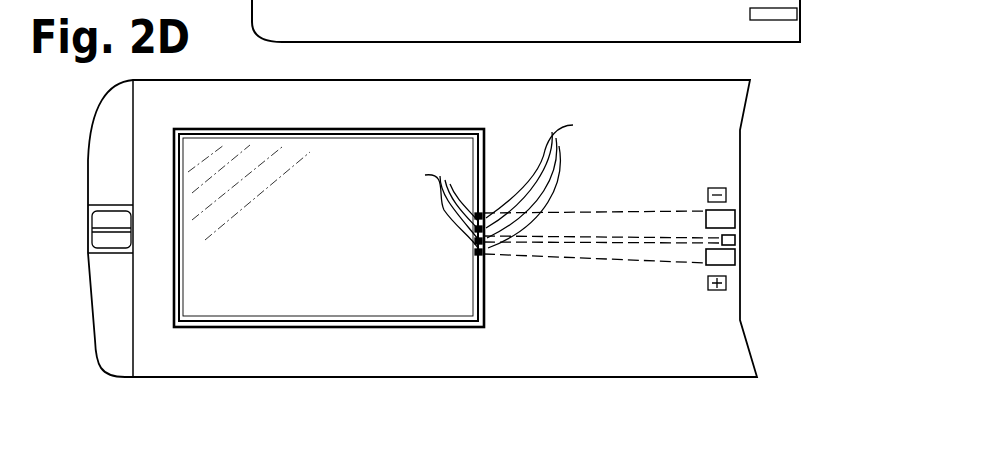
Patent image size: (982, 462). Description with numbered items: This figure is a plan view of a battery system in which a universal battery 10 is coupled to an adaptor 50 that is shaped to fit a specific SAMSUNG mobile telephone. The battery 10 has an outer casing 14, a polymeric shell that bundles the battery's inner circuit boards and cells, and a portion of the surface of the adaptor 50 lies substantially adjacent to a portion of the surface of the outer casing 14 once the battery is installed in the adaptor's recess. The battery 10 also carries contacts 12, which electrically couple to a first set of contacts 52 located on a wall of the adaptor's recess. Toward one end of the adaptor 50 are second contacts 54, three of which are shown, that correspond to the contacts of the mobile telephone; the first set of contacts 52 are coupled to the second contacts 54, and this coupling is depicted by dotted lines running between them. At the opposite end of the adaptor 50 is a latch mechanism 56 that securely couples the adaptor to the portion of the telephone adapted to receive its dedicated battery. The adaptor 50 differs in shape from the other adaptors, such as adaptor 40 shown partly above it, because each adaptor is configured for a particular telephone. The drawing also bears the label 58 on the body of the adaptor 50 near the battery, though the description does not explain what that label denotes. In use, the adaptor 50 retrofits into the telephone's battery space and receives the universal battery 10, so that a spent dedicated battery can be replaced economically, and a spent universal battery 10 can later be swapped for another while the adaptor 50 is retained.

The universal battery 10 is at (193, 281).
The contacts 12 is at (436, 206).
The outer casing 14 is at (381, 259).
The adaptor 40 is at (766, 48).
The adaptor 50 is at (758, 151).
The first set of contacts 52 is at (547, 179).
The second contacts 54 is at (737, 258).
The latch mechanism 56 is at (89, 228).
The circuit board 58 is at (539, 352).